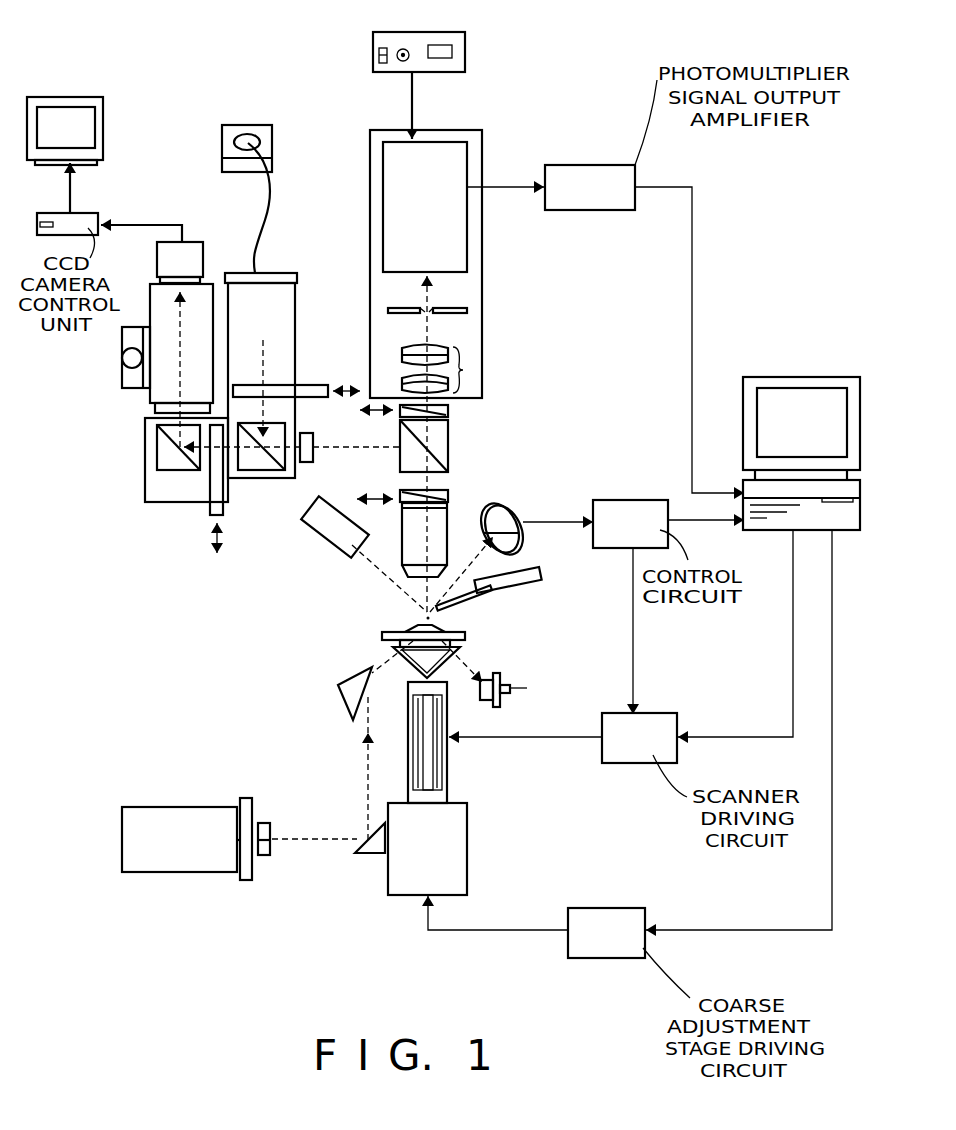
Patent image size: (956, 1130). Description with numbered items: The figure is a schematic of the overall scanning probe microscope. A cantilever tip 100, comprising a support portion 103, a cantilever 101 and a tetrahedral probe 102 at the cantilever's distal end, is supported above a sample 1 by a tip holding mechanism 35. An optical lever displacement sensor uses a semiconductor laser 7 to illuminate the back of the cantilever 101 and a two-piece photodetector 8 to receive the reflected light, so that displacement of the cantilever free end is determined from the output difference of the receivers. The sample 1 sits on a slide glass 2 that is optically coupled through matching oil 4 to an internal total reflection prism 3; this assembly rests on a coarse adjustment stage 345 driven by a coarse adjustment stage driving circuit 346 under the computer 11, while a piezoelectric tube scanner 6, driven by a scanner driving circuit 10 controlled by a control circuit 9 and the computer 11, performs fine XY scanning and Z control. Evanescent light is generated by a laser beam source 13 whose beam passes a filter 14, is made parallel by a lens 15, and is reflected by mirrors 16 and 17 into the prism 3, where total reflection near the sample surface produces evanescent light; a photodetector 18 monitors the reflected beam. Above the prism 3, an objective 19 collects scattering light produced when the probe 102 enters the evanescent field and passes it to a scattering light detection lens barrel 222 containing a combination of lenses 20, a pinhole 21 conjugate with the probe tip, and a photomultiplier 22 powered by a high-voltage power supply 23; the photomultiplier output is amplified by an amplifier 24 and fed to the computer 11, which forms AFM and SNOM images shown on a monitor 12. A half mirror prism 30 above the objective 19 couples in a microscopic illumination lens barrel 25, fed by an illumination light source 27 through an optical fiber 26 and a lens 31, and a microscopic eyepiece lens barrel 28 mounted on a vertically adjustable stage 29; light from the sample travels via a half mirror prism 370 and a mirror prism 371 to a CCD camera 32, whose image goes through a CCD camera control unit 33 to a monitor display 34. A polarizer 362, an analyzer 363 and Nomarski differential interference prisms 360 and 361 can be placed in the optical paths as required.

The sample 1 is at (413, 627).
The slide glass 2 is at (467, 638).
The internal total reflection prism 3 is at (397, 648).
The matching oil 4 is at (390, 633).
The piezoelectric tube scanner 6 is at (445, 778).
The semiconductor laser 7 is at (320, 522).
The two-piece photodetector 8 is at (520, 510).
The control circuit 9 is at (623, 510).
The scanner driving circuit 10 is at (637, 752).
The computer 11 is at (840, 530).
The monitor 12 is at (797, 397).
The laser beam source 13 is at (185, 855).
The filter 14 is at (252, 868).
The lens 15 is at (267, 845).
The mirror 16 is at (358, 852).
The mirror 17 is at (348, 675).
The photodetector 18 is at (525, 688).
The objective 19 is at (445, 515).
The combination of lenses 20 is at (463, 370).
The pinhole 21 is at (430, 302).
The photomultiplier 22 is at (438, 155).
The high-voltage power supply 23 is at (455, 50).
The amplifier 24 is at (625, 177).
The microscopic illumination lens barrel 25 is at (272, 300).
The optical fiber 26 is at (270, 192).
The illumination light source 27 is at (260, 125).
The microscopic eyepiece lens barrel 28 is at (148, 398).
The stage 29 is at (122, 382).
The half mirror prism 30 is at (450, 438).
The lens 31 is at (312, 433).
The CCD camera 32 is at (190, 242).
The CCD camera control unit 33 is at (100, 213).
The monitor display 34 is at (100, 140).
The tip holding mechanism 35 is at (520, 604).
The cantilever tip 100 is at (500, 608).
The cantilever 101 is at (448, 612).
The probe 102 is at (428, 620).
The support portion 103 is at (495, 597).
The scattering light detection lens barrel 222 is at (482, 147).
The coarse adjustment stage 345 is at (455, 867).
The coarse adjustment stage driving circuit 346 is at (623, 950).
The Nomarski differential interference prism 360 is at (402, 492).
The Nomarski differential interference prism 361 is at (450, 409).
The polarizer 362 is at (318, 385).
The analyzer 363 is at (215, 515).
The half mirror prism 370 is at (257, 466).
The mirror prism 371 is at (162, 458).